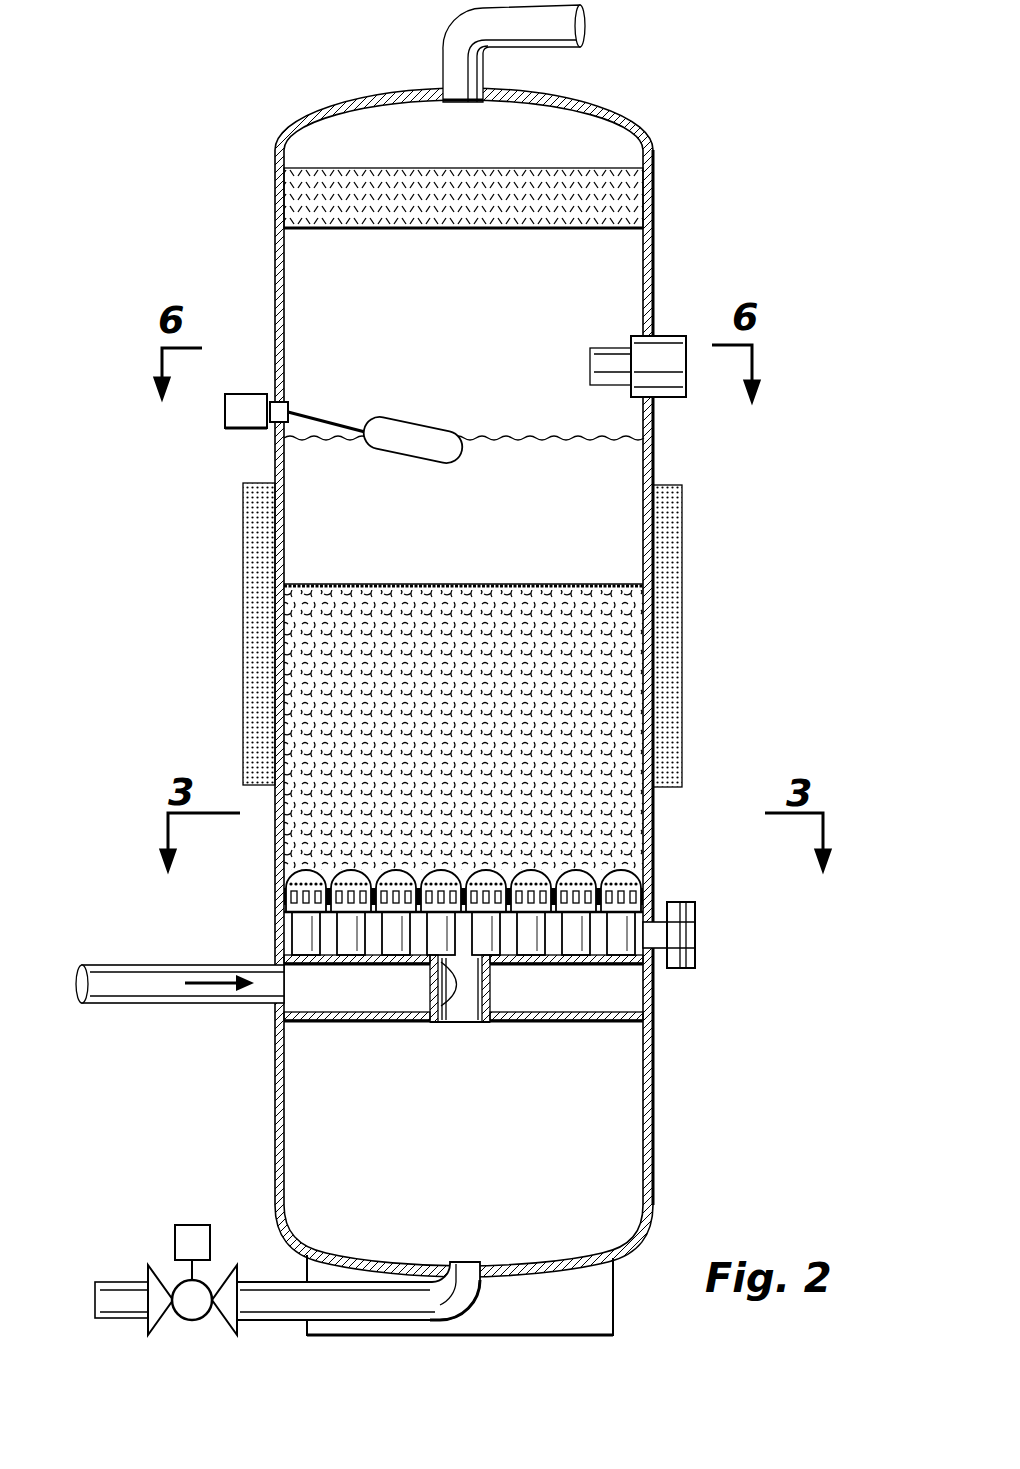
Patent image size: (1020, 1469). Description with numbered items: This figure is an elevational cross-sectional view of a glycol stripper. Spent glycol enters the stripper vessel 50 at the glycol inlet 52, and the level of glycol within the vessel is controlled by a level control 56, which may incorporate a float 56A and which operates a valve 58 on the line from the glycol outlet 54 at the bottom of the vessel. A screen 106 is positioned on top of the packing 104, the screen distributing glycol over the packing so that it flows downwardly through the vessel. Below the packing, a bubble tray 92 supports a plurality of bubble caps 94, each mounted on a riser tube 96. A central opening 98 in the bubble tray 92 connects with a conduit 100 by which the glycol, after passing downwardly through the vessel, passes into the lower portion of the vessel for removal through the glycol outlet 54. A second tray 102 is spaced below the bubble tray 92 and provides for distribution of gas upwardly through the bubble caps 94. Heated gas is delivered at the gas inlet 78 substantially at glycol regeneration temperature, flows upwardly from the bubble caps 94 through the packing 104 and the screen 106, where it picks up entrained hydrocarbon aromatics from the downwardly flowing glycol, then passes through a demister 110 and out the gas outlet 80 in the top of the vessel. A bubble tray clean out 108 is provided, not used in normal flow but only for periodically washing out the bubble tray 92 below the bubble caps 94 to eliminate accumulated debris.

The stripper vessel 50 is at (277, 262).
The glycol inlet 52 is at (664, 345).
The glycol outlet 54 is at (453, 1283).
The level control 56 is at (243, 410).
The float 56A is at (388, 425).
The valve 58 is at (188, 1292).
The gas inlet 78 is at (128, 996).
The gas outlet 80 is at (460, 48).
The bubble tray 92 is at (605, 965).
The bubble caps 94 is at (620, 885).
The riser tube 96 is at (613, 927).
The central opening 98 is at (445, 962).
The conduit 100 is at (493, 985).
The second tray 102 is at (348, 1022).
The packing 104 is at (610, 688).
The screen 106 is at (613, 585).
The bubble tray clean out 108 is at (655, 930).
The demister 110 is at (483, 192).